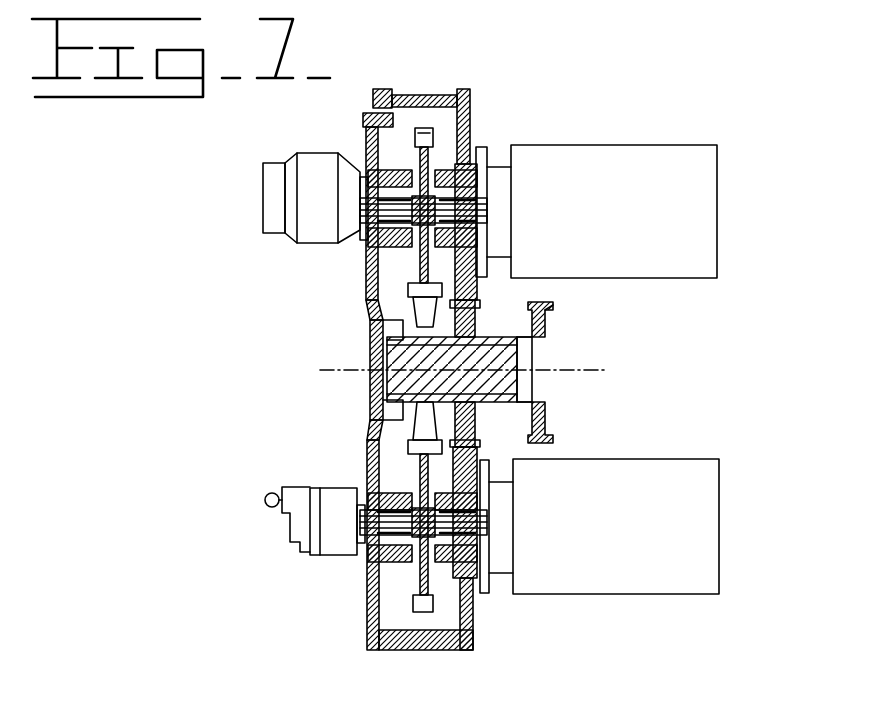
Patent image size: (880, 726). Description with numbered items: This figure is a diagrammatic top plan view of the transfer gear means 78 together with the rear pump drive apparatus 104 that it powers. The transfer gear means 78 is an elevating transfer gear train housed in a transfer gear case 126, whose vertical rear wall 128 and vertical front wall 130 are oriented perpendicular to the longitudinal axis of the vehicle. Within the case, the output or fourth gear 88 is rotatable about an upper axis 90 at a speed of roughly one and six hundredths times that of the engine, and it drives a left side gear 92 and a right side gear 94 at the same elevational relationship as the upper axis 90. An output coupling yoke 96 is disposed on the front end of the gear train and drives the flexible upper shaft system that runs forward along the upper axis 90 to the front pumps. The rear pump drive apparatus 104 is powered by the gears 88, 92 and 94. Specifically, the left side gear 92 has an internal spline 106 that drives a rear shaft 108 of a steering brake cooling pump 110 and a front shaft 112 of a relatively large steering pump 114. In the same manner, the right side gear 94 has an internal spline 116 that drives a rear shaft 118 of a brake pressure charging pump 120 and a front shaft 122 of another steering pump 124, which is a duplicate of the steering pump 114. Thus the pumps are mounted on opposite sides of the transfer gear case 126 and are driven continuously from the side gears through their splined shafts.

The transfer gear means 78 is at (377, 385).
The fourth gear 88 is at (380, 463).
The upper axis 90 is at (568, 368).
The left side gear 92 is at (425, 130).
The right side gear 94 is at (427, 610).
The output coupling yoke 96 is at (550, 319).
The rear pump drive apparatus 104 is at (623, 108).
The internal spline 106 is at (473, 207).
The rear shaft 108 is at (372, 223).
The steering brake cooling pump 110 is at (316, 162).
The front shaft 112 is at (473, 222).
The steering pump 114 is at (629, 190).
The internal spline 116 is at (478, 530).
The rear shaft 118 is at (367, 552).
The brake pressure charging pump 120 is at (325, 518).
The front shaft 122 is at (480, 522).
The steering pump 124 is at (633, 510).
The transfer gear case 126 is at (481, 95).
The rear wall 128 is at (375, 582).
The front wall 130 is at (473, 610).